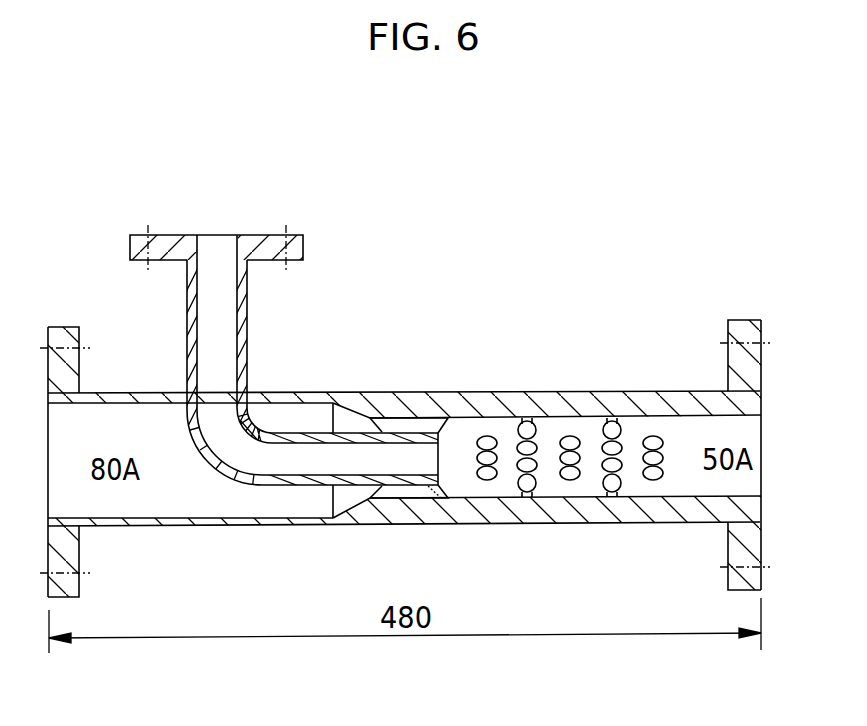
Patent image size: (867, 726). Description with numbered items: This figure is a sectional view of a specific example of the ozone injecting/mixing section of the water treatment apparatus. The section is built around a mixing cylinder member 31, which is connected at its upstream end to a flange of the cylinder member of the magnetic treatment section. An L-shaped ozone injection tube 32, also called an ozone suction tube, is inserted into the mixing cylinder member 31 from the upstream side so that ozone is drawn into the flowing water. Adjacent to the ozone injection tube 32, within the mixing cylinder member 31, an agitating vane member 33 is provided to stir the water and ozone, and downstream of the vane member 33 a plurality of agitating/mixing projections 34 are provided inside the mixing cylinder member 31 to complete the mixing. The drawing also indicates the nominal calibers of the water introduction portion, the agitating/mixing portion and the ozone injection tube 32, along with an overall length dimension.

The mixing cylinder member 31 is at (643, 391).
The L-shaped ozone injection tube 32 is at (247, 327).
The agitating vane member 33 is at (455, 417).
The agitating/mixing projections 34 is at (541, 445).